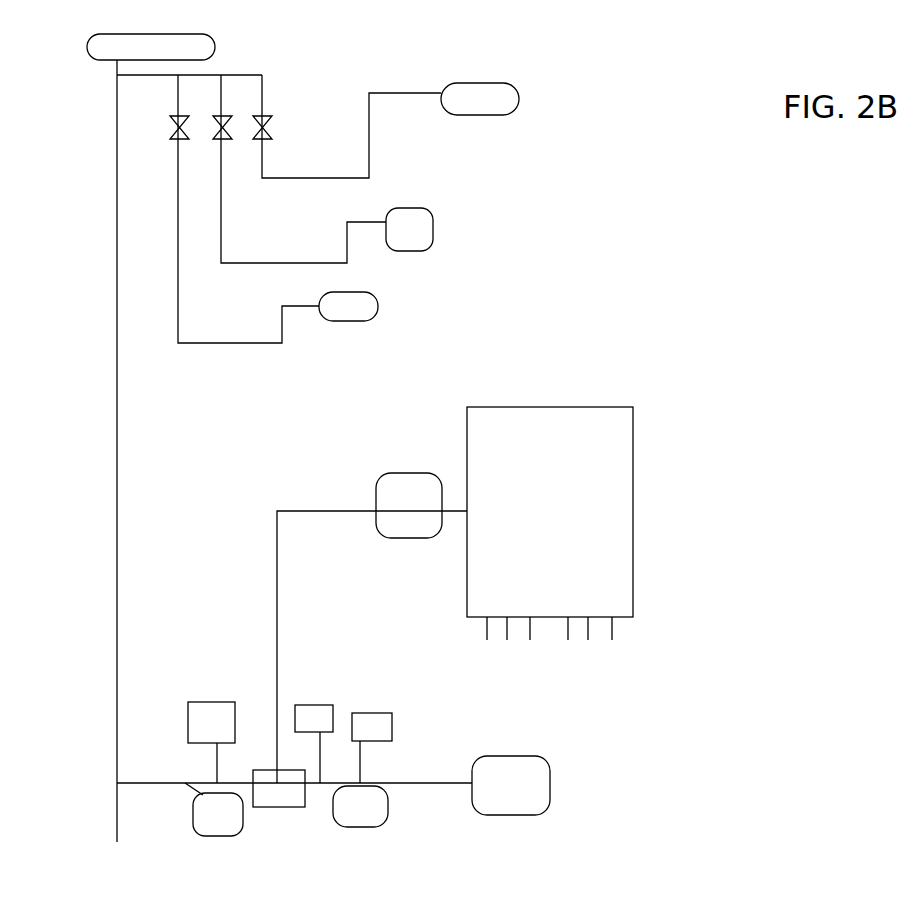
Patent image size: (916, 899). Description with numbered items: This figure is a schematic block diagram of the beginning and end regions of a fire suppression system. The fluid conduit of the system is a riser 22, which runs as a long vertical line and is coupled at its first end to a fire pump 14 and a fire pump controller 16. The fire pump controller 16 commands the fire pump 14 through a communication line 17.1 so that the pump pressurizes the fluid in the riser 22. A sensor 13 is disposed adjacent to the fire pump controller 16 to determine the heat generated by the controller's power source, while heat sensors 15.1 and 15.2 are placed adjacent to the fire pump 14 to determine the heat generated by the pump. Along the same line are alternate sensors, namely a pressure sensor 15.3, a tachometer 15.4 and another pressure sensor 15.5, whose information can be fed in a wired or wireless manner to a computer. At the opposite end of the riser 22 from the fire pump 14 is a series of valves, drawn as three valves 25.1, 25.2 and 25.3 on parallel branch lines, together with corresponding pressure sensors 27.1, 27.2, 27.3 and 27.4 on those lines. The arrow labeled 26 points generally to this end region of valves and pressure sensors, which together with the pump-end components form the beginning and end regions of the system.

The sensor 13 is at (405, 473).
The fire pump 14 is at (295, 807).
The heat sensor 15.1 is at (235, 835).
The heat sensor 15.2 is at (373, 822).
The pressure sensor 15.3 is at (209, 702).
The tachometer 15.4 is at (313, 705).
The pressure sensor 15.5 is at (377, 712).
The fire pump controller 16 is at (633, 465).
The communication line 17.1 is at (277, 577).
The riser 22 is at (117, 407).
The valve 25.1 is at (185, 140).
The valve 25.2 is at (228, 140).
The valve 25.3 is at (266, 116).
The fluid system 26 is at (615, 255).
The pressure sensor 27.1 is at (510, 114).
The pressure sensor 27.2 is at (425, 246).
The pressure sensor 27.3 is at (378, 308).
The pressure sensor 27.4 is at (215, 45).